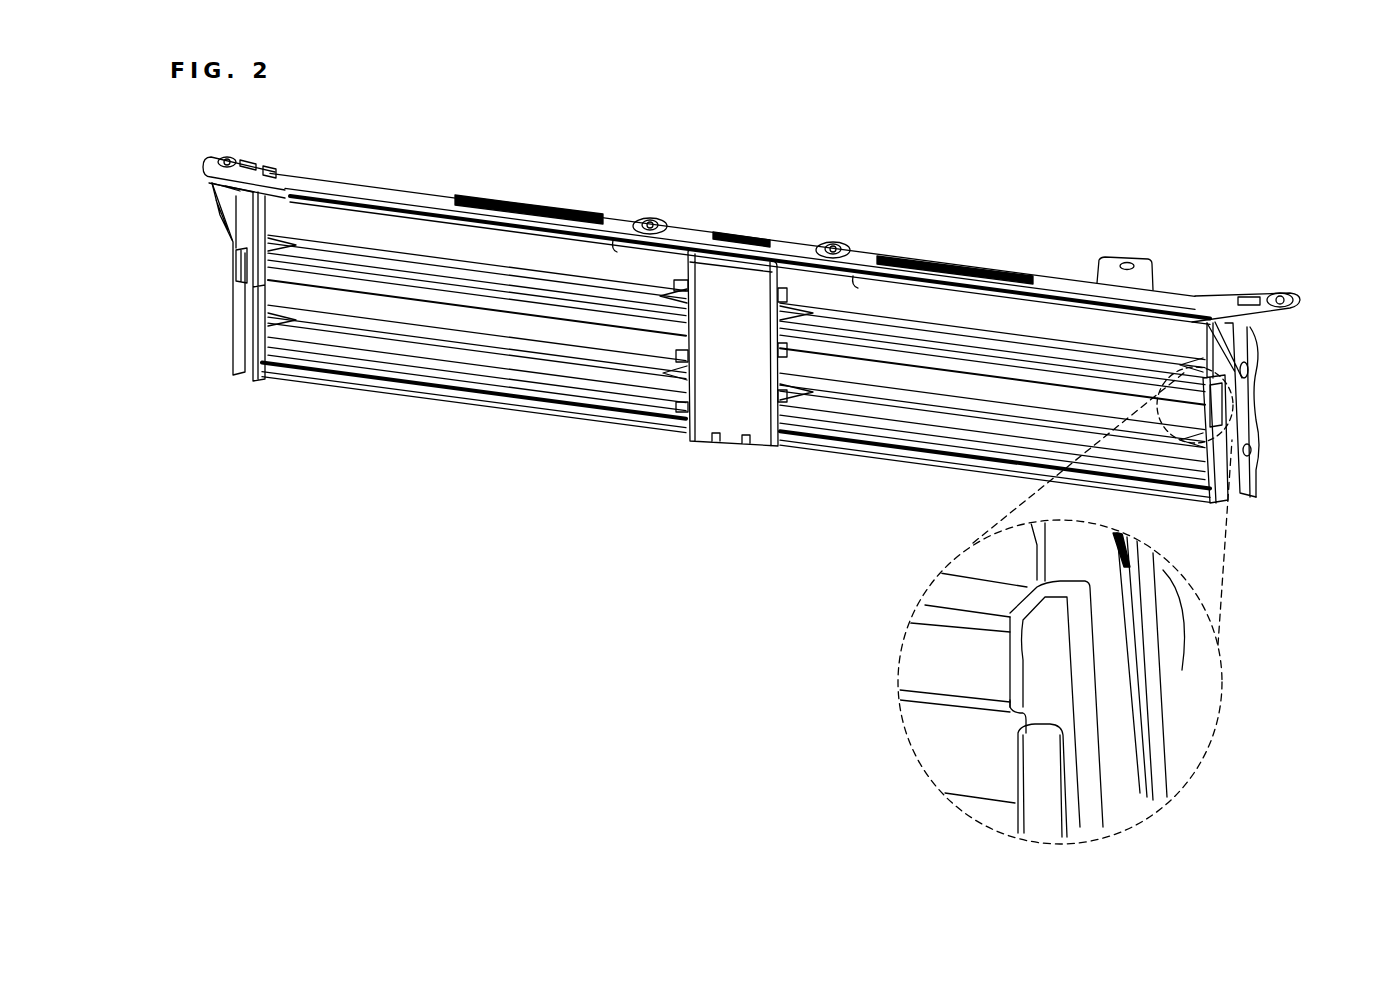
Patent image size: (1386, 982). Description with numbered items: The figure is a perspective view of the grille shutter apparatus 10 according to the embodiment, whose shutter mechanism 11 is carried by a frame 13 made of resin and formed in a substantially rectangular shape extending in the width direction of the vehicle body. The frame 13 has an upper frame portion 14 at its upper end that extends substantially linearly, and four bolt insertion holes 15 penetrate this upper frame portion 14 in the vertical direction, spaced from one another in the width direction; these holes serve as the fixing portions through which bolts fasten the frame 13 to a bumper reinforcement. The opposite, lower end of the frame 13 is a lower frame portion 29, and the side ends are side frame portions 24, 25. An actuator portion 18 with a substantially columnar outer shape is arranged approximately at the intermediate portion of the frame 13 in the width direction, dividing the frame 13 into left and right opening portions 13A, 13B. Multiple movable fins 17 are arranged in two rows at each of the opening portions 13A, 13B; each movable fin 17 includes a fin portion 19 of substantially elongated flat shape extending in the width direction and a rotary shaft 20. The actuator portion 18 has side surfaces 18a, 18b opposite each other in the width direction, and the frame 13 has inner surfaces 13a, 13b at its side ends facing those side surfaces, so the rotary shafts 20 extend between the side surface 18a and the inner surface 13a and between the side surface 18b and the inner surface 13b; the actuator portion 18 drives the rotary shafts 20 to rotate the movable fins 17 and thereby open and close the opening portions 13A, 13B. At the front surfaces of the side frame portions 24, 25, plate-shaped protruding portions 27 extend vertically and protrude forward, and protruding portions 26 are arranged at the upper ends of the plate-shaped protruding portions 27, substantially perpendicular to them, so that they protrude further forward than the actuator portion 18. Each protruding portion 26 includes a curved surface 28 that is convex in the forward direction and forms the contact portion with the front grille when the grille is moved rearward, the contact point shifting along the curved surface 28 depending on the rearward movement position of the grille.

The grille shutter device 10 is at (1212, 172).
The shutter mechanism 11 is at (645, 345).
The frame 13 is at (1296, 298).
The left opening portion 13A is at (855, 280).
The right opening portion 13B is at (614, 245).
The inner surface 13a is at (1200, 483).
The inner surface 13b is at (254, 378).
The upper frame portion 14 is at (1060, 290).
The bolt insertion hole 15 is at (227, 157).
The movable fin 17 is at (410, 143).
The actuator portion 18 is at (732, 445).
The side surface 18a is at (797, 433).
The side surface 18b is at (677, 413).
The fin portion 19 is at (340, 217).
The rotary shaft 20 is at (392, 257).
The side frame portion 24 is at (1217, 358).
The side frame portion 25 is at (240, 235).
The protruding portion 26 is at (240, 265).
The plate-shaped protruding portion 27 is at (245, 310).
The curved surface 28 is at (1013, 648).
The lower frame portion 29 is at (507, 408).